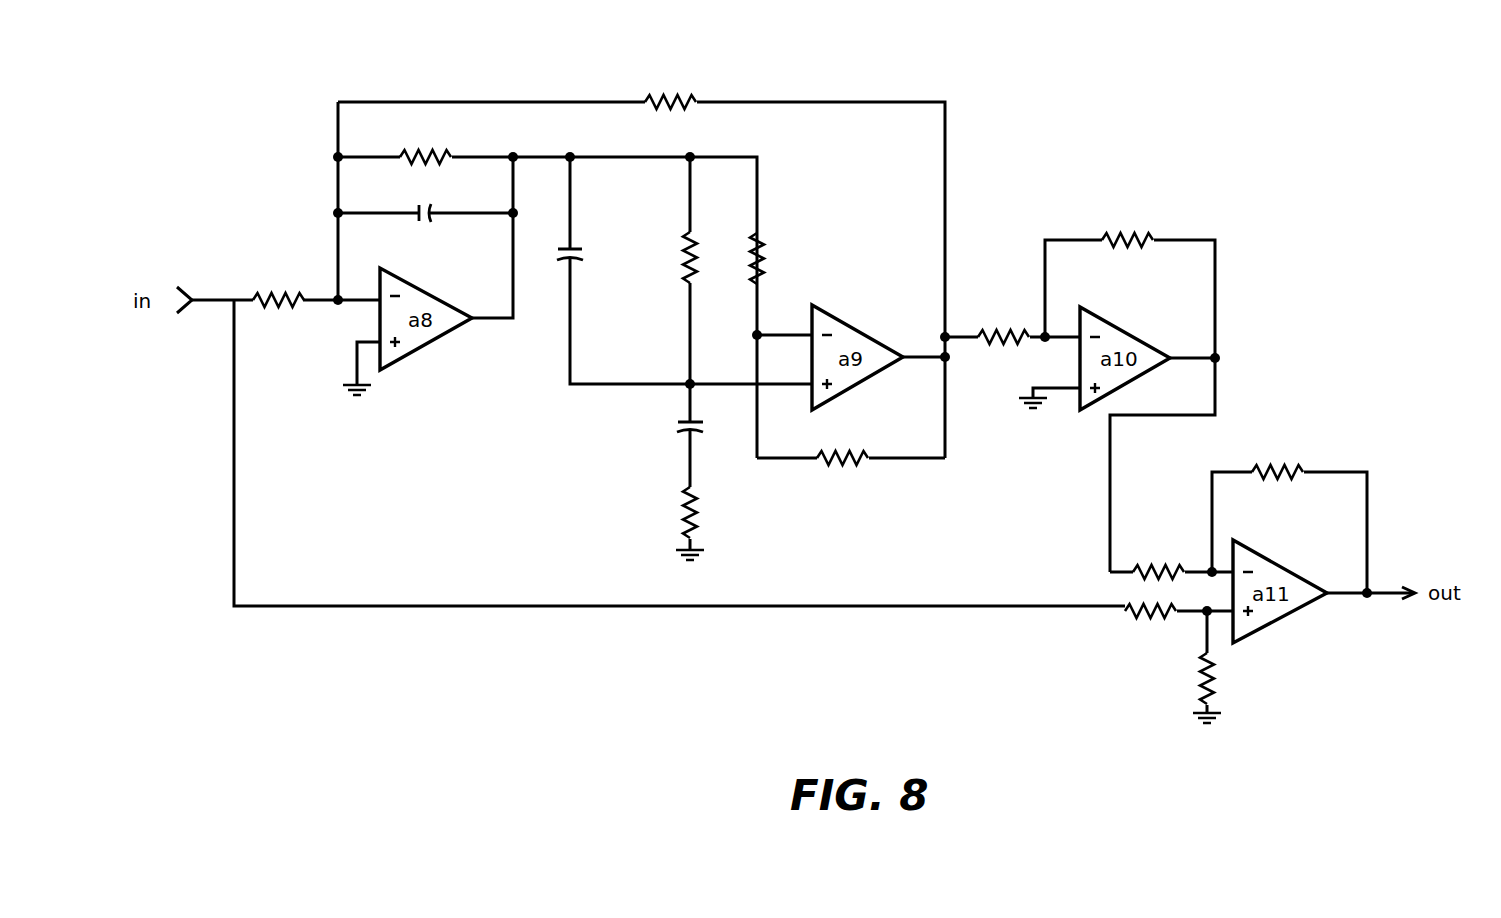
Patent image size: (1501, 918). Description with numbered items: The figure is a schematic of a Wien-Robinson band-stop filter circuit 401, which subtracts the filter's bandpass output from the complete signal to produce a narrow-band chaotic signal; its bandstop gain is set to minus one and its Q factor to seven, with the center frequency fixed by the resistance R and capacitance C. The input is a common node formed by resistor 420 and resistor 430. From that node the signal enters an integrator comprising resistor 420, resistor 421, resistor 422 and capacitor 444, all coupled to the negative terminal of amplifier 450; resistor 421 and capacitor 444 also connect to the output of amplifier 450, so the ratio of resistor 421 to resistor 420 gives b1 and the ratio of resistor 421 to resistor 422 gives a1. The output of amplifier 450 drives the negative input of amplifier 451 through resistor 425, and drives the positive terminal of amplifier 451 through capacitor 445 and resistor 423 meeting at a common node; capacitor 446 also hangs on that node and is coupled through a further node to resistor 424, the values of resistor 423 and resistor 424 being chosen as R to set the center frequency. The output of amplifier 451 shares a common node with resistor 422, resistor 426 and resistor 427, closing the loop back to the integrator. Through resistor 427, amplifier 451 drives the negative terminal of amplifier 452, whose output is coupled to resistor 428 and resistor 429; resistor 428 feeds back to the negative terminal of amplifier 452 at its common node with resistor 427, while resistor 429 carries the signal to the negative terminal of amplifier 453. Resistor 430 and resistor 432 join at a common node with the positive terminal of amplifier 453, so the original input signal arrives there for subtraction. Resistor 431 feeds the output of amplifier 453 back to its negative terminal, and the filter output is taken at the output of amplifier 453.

The active filter circuit 401 is at (495, 102).
The resistor 420 is at (275, 292).
The resistor 421 is at (425, 136).
The resistor 422 is at (665, 98).
The resistor 423 is at (685, 232).
The resistor 424 is at (693, 523).
The resistor 425 is at (767, 240).
The resistor 426 is at (838, 465).
The resistor 427 is at (997, 328).
The resistor 428 is at (1130, 235).
The resistor 429 is at (1155, 565).
The resistor 430 is at (1130, 617).
The resistor 431 is at (1288, 468).
The resistor 432 is at (1215, 682).
The capacitor 444 is at (441, 233).
The capacitor 445 is at (573, 262).
The capacitor 446 is at (678, 427).
The amplifier 450 is at (449, 333).
The amplifier 451 is at (865, 325).
The amplifier 452 is at (1140, 333).
The amplifier 453 is at (1292, 613).